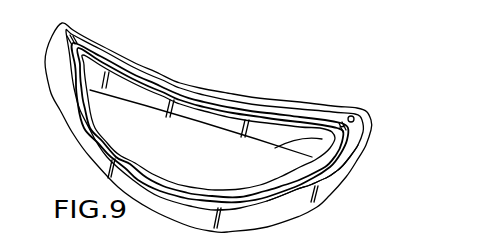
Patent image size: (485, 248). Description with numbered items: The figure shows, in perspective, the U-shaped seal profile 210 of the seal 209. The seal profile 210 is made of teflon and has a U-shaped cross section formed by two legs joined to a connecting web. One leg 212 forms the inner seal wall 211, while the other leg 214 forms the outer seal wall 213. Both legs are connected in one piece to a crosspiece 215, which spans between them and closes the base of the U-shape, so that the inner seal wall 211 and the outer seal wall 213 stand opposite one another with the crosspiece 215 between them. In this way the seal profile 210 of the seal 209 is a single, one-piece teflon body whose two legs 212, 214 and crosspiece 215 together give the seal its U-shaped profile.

The seal 209 is at (342, 83).
The seal profile 210 is at (356, 120).
The inner seal wall 211 is at (313, 140).
The leg 212 is at (200, 102).
The outer seal wall 213 is at (347, 160).
The leg 214 is at (320, 173).
The crosspiece 215 is at (338, 125).